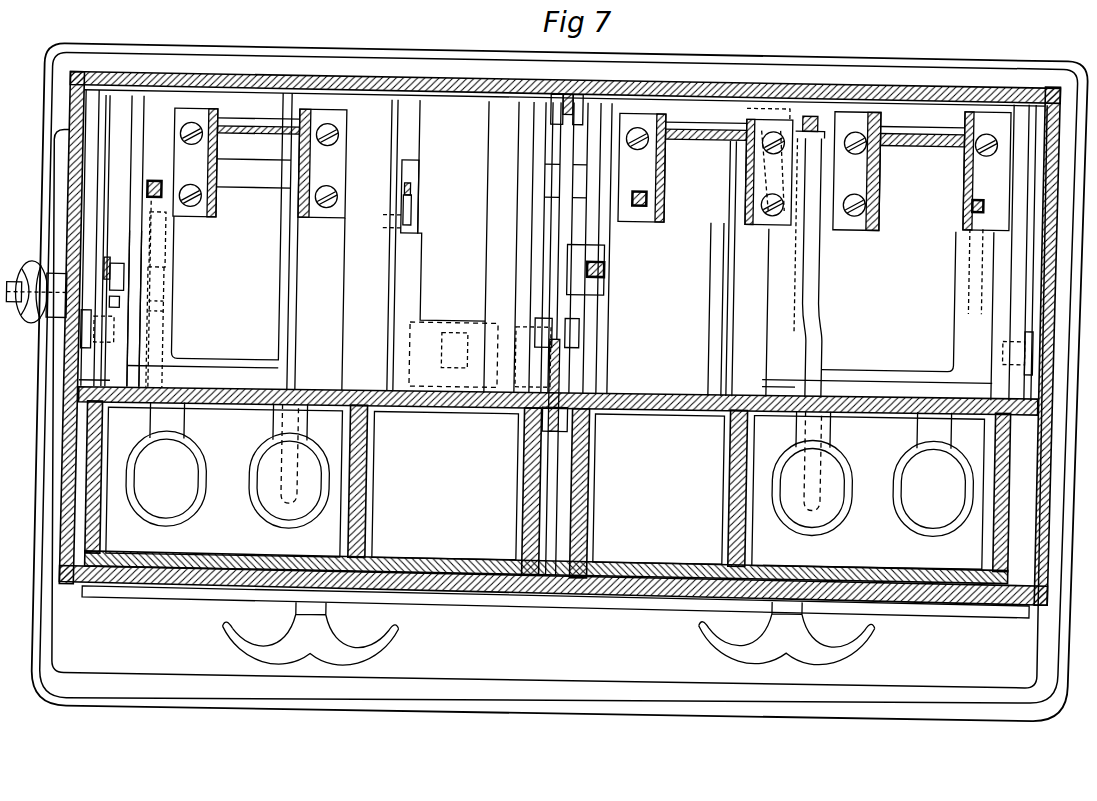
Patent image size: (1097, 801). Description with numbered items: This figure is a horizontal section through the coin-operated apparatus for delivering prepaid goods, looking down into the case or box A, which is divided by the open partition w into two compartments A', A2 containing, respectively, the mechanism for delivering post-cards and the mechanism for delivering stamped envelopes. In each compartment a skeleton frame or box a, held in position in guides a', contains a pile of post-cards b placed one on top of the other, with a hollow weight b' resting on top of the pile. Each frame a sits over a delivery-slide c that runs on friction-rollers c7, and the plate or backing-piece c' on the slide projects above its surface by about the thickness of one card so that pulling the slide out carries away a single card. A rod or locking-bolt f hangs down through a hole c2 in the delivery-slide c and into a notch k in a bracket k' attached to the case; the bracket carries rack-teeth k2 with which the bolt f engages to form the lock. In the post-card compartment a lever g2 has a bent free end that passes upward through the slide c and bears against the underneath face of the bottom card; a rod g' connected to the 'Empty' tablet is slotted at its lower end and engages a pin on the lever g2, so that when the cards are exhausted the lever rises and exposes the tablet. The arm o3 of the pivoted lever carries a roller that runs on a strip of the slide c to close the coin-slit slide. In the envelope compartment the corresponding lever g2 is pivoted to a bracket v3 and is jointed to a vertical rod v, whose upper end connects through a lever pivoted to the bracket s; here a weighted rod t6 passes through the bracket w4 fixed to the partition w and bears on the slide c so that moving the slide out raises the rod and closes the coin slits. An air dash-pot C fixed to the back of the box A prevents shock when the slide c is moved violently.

The case or box A is at (547, 382).
The skeleton frame or box a is at (559, 391).
The guides a' is at (541, 393).
The post-cards b is at (549, 470).
The hollow weight b' is at (548, 492).
The bracket s is at (305, 495).
The terminal block i is at (219, 204).
The delivery-slide c is at (558, 244).
The air dash-pot C is at (452, 210).
The compartment A' is at (226, 288).
The compartment A2 is at (888, 301).
The rod g' is at (417, 197).
The lever g2 is at (838, 333).
The rod or locking-bolt f is at (149, 189).
The hole c2 is at (568, 282).
The plate recess c'' is at (453, 354).
The friction-rollers c7 is at (547, 311).
The plate or backing-piece c' is at (556, 350).
The open partition w is at (570, 244).
The rod t6 is at (607, 261).
The bracket arm w4 is at (575, 428).
The notch k is at (535, 298).
The bracket k' is at (554, 315).
The rack-teeth k2 is at (546, 268).
The arm or extension o3 is at (65, 280).
The vertical rod v is at (811, 120).
The bracket v3 is at (747, 94).